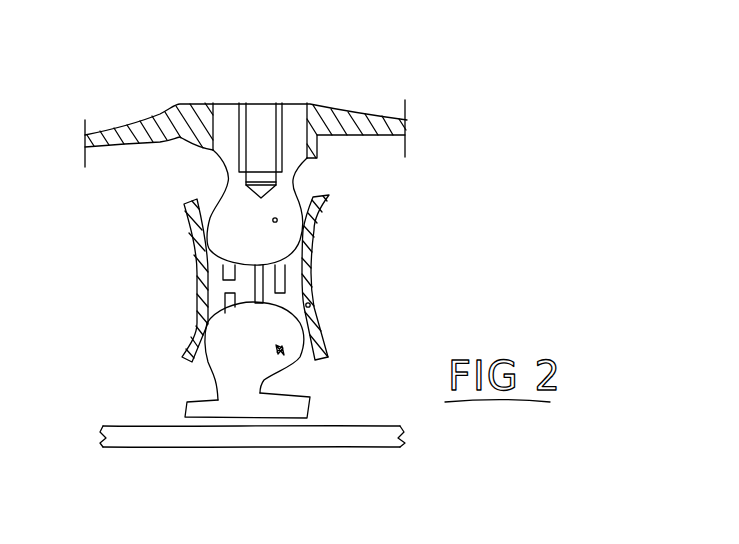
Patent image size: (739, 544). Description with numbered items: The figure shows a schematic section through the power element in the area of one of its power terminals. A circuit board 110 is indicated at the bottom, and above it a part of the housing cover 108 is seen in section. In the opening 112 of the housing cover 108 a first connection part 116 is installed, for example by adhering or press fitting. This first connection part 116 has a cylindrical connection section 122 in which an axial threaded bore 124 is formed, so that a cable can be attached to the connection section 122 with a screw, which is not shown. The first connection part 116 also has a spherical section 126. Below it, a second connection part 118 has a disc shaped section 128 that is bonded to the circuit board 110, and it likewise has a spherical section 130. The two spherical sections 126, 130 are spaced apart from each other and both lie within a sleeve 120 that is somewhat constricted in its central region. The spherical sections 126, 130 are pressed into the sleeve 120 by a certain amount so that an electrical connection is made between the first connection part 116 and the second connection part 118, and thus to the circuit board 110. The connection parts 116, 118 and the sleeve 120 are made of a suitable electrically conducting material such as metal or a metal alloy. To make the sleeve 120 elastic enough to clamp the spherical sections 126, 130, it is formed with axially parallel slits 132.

The housing cover 108 is at (380, 124).
The circuit board 110 is at (329, 440).
The opening 112 is at (224, 110).
The first connection part 116 is at (293, 113).
The second connection part 118 is at (283, 353).
The sleeve 120 is at (311, 307).
The cylindrical connection section 122 is at (233, 113).
The axial threaded bore 124 is at (260, 116).
The spherical section 126 is at (277, 222).
The disc shaped section 128 is at (190, 402).
The spherical section 130 is at (223, 333).
The axially parallel slits 132 is at (223, 273).